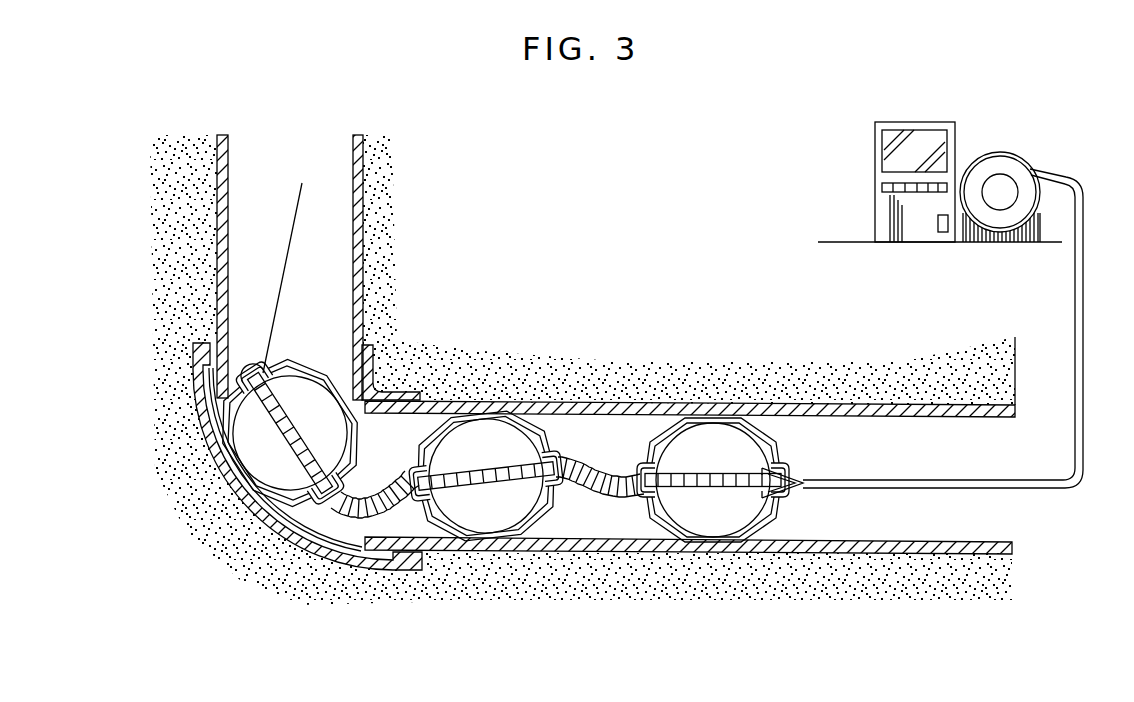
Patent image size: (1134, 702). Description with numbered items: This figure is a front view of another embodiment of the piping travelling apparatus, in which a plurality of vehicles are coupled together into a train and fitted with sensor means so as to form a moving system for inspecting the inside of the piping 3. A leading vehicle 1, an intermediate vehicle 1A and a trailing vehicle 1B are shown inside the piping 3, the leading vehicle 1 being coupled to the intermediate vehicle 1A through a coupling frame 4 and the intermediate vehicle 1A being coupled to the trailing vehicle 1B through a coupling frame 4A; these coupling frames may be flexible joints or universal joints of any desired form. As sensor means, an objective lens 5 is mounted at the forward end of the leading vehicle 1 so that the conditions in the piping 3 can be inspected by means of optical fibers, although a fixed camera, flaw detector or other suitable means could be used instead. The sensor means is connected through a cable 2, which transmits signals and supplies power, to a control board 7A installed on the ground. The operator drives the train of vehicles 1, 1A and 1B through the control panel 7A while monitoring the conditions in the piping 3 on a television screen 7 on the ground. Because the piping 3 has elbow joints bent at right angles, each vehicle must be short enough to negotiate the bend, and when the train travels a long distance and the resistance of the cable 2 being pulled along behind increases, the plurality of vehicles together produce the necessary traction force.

The leading vehicle 1 is at (385, 362).
The intermediate vehicle 1A is at (493, 453).
The trailing vehicle 1B is at (715, 443).
The cable 2 is at (870, 482).
The piping 3 is at (934, 410).
The coupling frame 4 is at (400, 468).
The coupling frame 4A is at (602, 463).
The objective lens 5 is at (247, 372).
The television screen 7 is at (922, 158).
The control board 7A is at (887, 220).